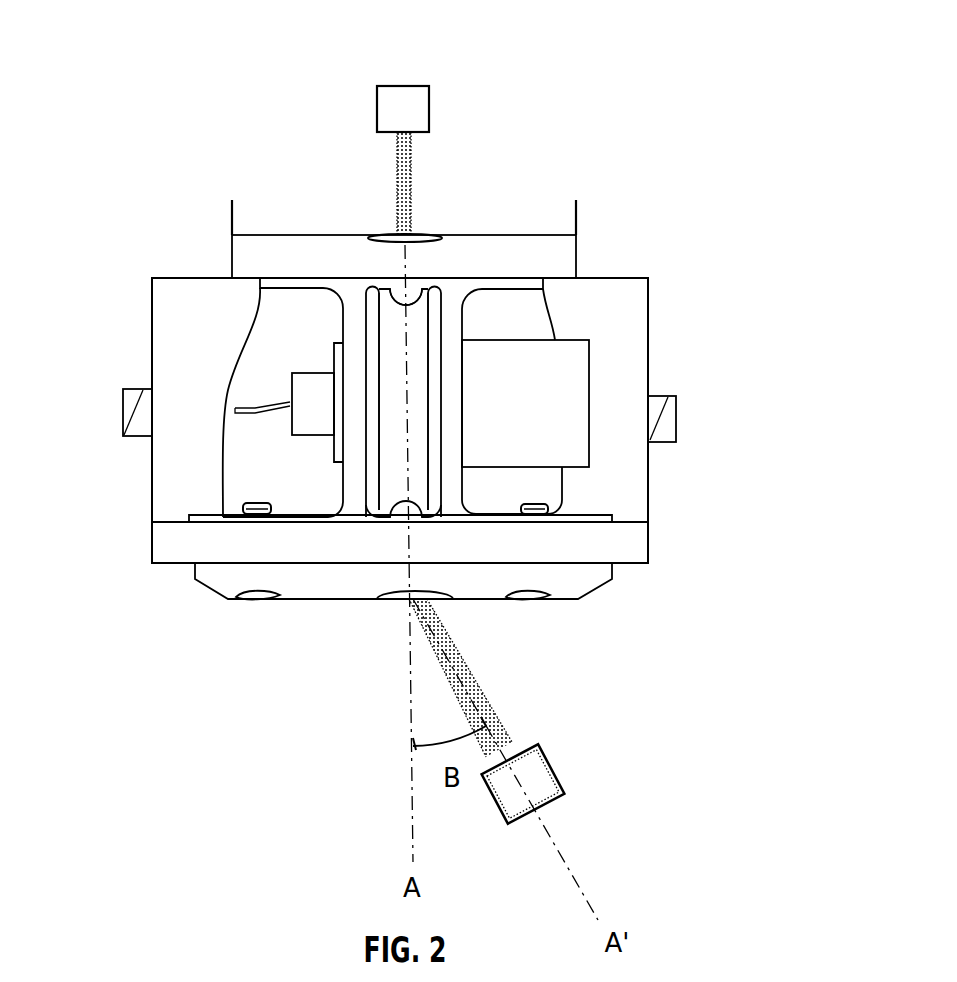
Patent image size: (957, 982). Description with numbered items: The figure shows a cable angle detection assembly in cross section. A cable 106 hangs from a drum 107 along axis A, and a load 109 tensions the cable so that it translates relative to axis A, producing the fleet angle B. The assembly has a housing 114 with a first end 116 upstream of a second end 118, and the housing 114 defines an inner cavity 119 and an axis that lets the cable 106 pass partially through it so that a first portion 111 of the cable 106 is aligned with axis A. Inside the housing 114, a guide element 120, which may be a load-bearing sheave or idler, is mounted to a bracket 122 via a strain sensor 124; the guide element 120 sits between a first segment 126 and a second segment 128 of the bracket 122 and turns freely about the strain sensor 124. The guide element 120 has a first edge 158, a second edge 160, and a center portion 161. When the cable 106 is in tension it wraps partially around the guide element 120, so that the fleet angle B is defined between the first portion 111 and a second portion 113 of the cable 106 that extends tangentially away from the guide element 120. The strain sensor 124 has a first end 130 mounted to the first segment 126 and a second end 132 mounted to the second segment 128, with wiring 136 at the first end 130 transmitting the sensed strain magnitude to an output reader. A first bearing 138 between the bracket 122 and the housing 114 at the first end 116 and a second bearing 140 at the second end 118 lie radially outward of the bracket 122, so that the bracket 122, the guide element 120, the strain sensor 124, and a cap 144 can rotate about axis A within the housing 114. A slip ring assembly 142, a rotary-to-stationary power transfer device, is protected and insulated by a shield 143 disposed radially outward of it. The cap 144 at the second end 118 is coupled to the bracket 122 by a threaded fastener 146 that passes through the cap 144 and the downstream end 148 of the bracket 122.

The cable 106 is at (433, 669).
The drum 107 is at (429, 105).
The load 109 is at (550, 757).
The first portion of the cable 111 is at (397, 208).
The second portion of the cable 113 is at (463, 665).
The housing 114 is at (648, 300).
The first end 116 is at (451, 236).
The second end 118 is at (444, 587).
The inner cavity 119 is at (630, 475).
The guide element 120 is at (397, 348).
The bracket 122 is at (273, 330).
The strain sensor 124 is at (373, 430).
The first segment 126 is at (355, 375).
The second segment 128 is at (373, 397).
The first end 130 is at (308, 420).
The second end 132 is at (575, 363).
The wiring 136 is at (235, 410).
The first bearing 138 is at (250, 268).
The second bearing 140 is at (168, 539).
The slip ring assembly 142 is at (676, 410).
The shield 143 is at (676, 435).
The cap 144 is at (330, 593).
The fastener 146 is at (540, 512).
The downstream end of the bracket 148 is at (612, 517).
The first edge 158 is at (375, 295).
The second edge 160 is at (437, 296).
The center portion 161 is at (407, 290).